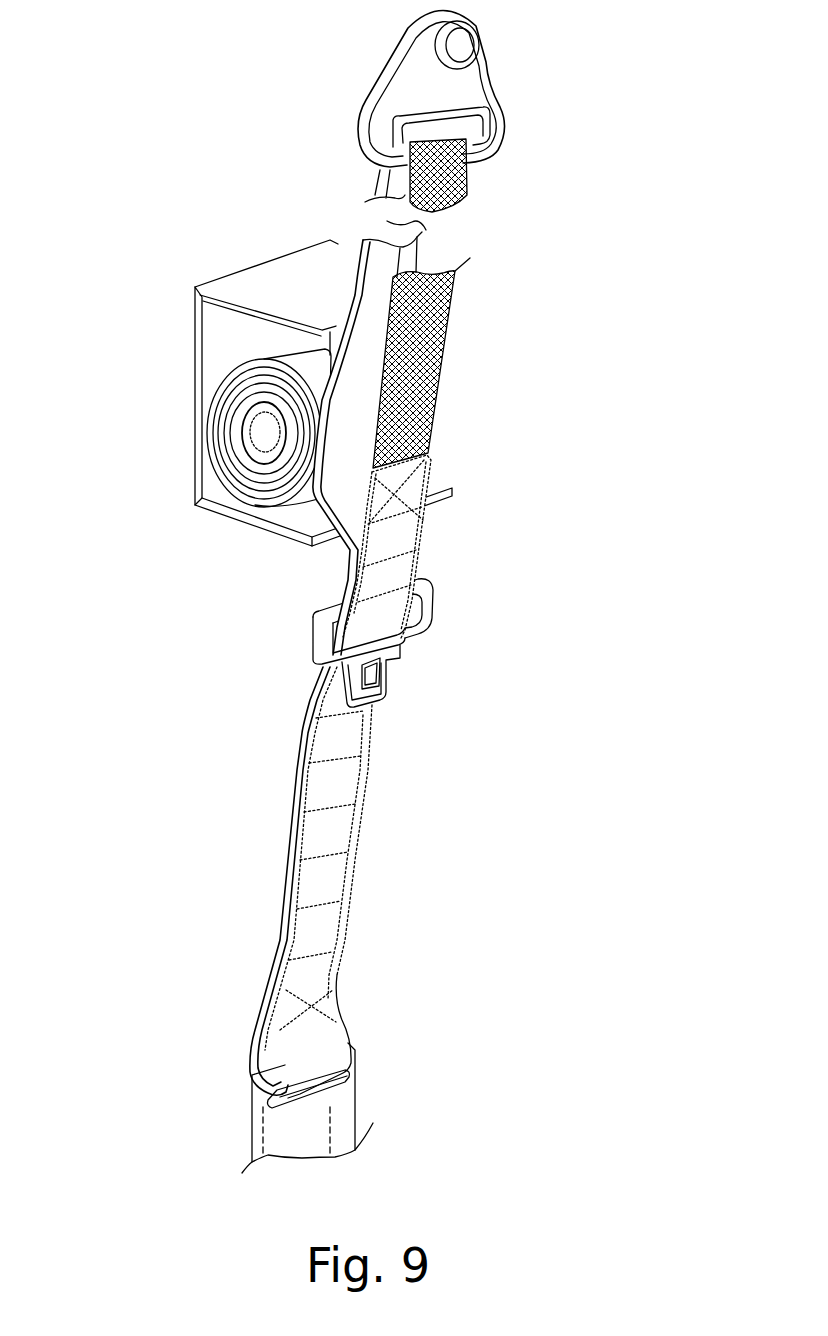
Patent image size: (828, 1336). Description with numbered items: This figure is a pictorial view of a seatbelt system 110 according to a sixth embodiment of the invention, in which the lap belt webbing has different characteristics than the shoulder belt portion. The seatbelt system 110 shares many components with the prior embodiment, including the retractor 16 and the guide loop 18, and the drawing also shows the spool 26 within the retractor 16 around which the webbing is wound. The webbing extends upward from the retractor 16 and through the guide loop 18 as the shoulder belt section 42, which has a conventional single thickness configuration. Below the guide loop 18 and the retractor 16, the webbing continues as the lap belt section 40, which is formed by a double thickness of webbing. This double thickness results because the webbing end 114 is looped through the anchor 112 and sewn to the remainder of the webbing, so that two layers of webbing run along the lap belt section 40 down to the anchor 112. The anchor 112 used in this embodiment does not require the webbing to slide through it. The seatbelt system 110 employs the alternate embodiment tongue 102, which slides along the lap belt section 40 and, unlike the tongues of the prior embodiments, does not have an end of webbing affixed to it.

The retractor 16 is at (261, 359).
The guide loop 18 is at (463, 95).
The webbing spool 26 is at (248, 405).
The lap belt section 40 is at (328, 838).
The shoulder belt section 42 is at (421, 348).
The tongue 102 is at (462, 469).
The seatbelt system 110 is at (488, 420).
The anchor 112 is at (350, 1083).
The webbing end 114 is at (430, 481).